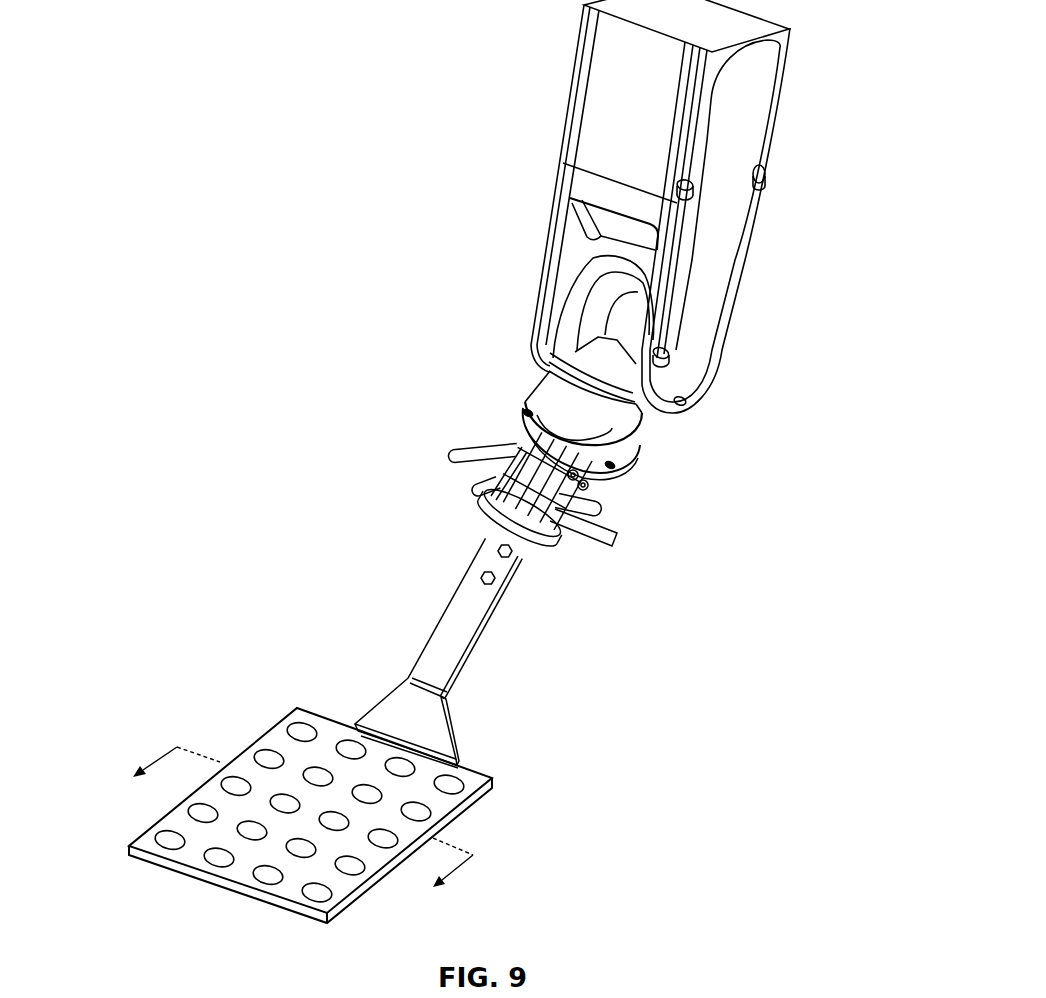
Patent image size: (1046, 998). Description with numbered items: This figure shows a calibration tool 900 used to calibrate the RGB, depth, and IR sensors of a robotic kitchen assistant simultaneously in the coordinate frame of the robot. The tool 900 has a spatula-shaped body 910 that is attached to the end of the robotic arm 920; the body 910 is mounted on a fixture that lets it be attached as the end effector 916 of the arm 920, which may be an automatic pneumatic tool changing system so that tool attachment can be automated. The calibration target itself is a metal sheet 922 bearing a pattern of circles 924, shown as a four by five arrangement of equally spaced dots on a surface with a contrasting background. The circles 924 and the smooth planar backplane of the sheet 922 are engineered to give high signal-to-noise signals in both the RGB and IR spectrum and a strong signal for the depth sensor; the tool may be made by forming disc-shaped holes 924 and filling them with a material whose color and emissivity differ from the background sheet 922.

The calibration tool 900 is at (417, 38).
The spatula-shaped body 910 is at (529, 805).
The end effector 916 is at (520, 448).
The robotic arm 920 is at (746, 259).
The metal sheet 922 is at (280, 727).
The pattern of circles 924 is at (157, 837).